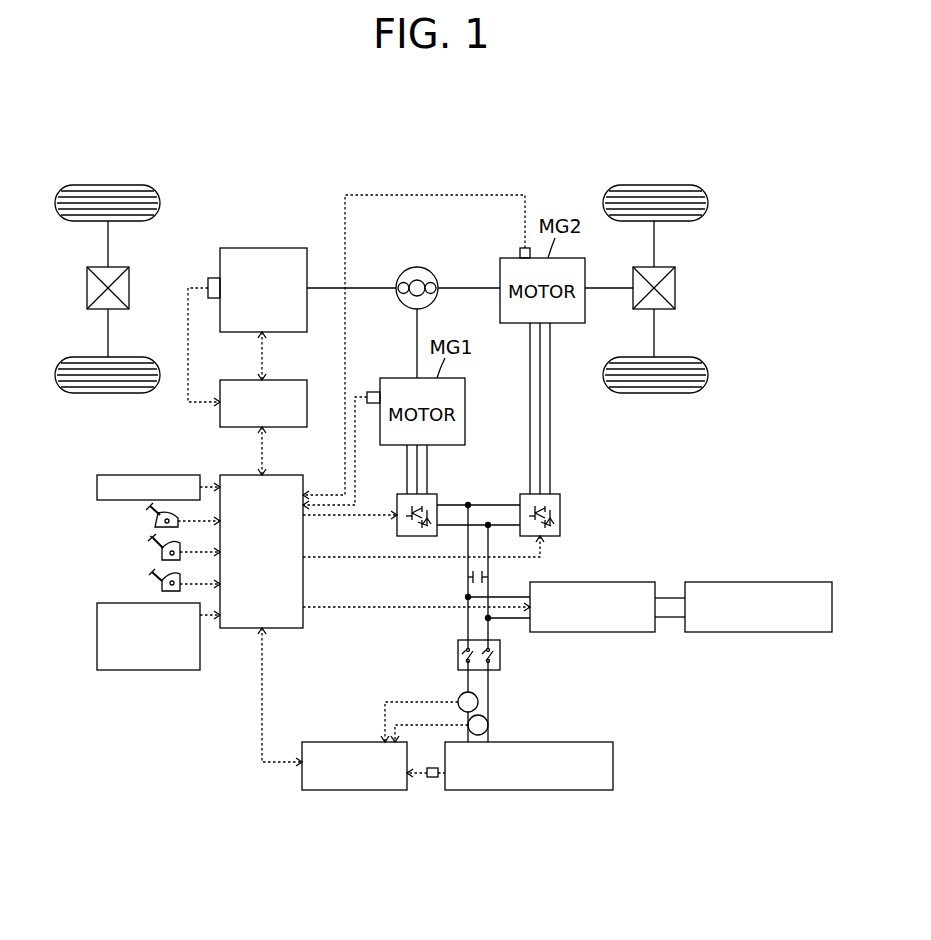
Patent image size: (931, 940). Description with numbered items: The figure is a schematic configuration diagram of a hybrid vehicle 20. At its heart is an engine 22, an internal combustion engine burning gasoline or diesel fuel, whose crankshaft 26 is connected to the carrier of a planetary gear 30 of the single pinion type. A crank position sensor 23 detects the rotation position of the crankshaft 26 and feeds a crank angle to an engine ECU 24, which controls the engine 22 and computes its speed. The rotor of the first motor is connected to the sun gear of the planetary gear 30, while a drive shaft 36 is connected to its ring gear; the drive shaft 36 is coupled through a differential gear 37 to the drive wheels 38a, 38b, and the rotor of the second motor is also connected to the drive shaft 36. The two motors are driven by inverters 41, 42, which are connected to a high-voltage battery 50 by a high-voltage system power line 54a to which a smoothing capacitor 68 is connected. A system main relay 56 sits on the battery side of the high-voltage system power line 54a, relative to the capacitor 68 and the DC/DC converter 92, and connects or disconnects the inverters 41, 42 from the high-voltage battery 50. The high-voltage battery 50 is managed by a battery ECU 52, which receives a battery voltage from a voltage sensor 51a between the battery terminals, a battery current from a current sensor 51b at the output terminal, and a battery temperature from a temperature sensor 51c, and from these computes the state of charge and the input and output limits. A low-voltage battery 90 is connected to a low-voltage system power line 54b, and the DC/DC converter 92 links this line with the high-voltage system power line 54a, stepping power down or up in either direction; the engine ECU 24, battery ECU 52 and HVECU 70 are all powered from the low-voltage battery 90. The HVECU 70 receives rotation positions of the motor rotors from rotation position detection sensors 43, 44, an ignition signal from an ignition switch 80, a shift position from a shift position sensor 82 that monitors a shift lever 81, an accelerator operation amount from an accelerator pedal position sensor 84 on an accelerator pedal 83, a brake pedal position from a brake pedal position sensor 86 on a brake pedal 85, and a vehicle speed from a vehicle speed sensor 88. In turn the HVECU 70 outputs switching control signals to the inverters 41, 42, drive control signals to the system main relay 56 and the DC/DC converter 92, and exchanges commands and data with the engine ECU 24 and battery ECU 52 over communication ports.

The hybrid vehicle 20 is at (552, 125).
The engine 22 is at (258, 248).
The crank position sensor 23 is at (213, 278).
The engine ECU 24 is at (282, 380).
The crankshaft 26 is at (316, 288).
The planetary gear 30 is at (415, 267).
The drive shaft 36 is at (608, 288).
The differential gear 37 is at (660, 267).
The drive wheel 38a is at (655, 185).
The drive wheel 38b is at (655, 393).
The inverter 41 is at (434, 494).
The inverter 42 is at (558, 494).
The rotation position detection sensor 43 is at (373, 392).
The rotation position detection sensor 44 is at (520, 247).
The high-voltage battery 50 is at (614, 762).
The voltage sensor 51a is at (489, 725).
The current sensor 51b is at (479, 701).
The temperature sensor 51c is at (433, 778).
The battery ECU 52 is at (370, 742).
The high-voltage system power line 54a is at (485, 524).
The low-voltage system power line 54b is at (662, 617).
The system main relay 56 is at (501, 656).
The smoothing capacitor 68 is at (466, 577).
The HVECU 70 is at (282, 475).
The ignition switch 80 is at (97, 487).
The shift lever 81 is at (150, 508).
The shift position sensor 82 is at (156, 522).
The accelerator pedal 83 is at (152, 540).
The accelerator pedal position sensor 84 is at (161, 556).
The brake pedal 85 is at (152, 575).
The brake pedal position sensor 86 is at (161, 588).
The vehicle speed sensor 88 is at (97, 612).
The low-voltage battery 90 is at (790, 582).
The DC/DC converter 92 is at (606, 582).